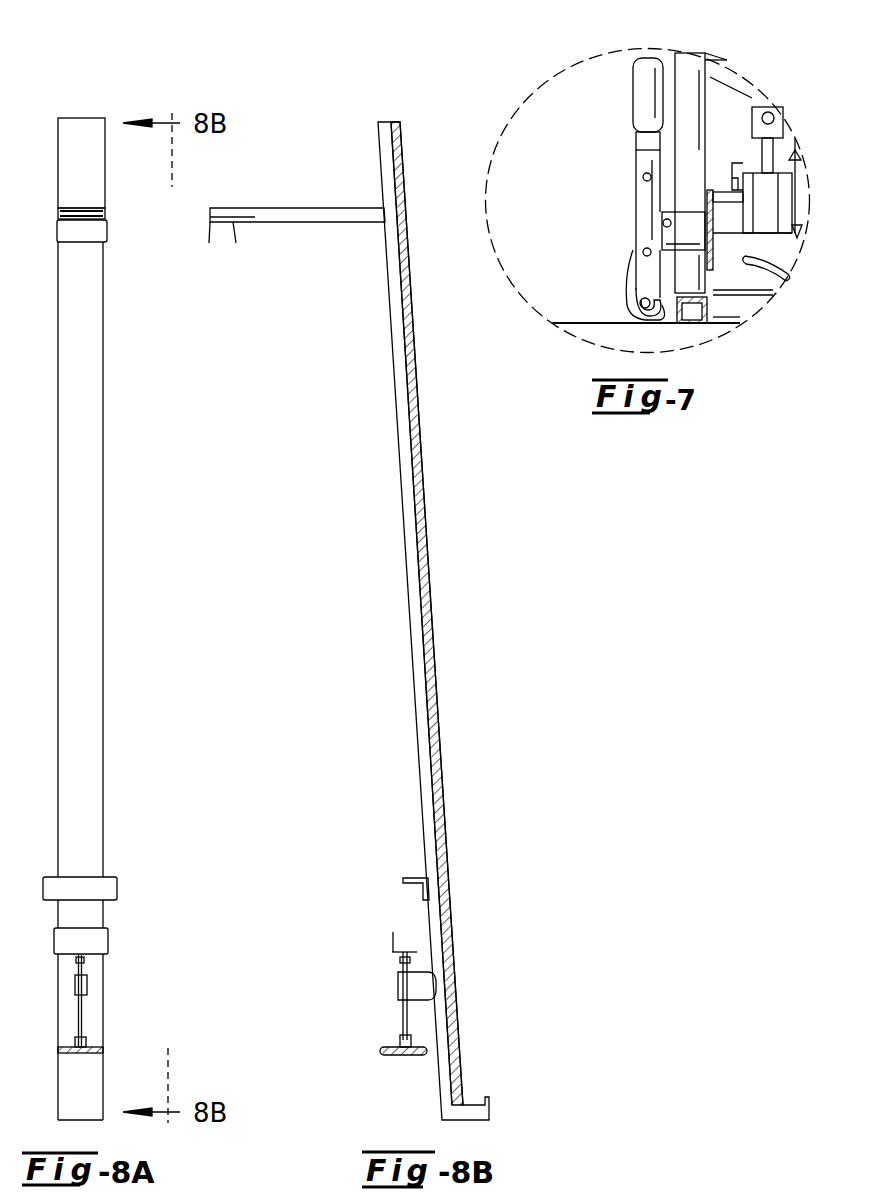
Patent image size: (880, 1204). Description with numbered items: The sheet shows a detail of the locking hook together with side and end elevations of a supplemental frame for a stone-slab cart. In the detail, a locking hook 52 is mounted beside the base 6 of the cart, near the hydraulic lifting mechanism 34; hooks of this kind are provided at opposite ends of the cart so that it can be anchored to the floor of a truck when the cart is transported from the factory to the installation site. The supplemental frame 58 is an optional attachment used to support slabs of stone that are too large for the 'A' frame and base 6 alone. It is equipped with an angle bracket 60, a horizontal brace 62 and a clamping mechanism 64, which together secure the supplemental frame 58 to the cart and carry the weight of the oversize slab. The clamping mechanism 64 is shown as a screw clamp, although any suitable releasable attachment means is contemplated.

In FIG. 7, the base 6 is at (688, 173).
In FIG. 7, the hydraulic lifting mechanism 34 is at (767, 213).
In FIG. 7, the locking hook 52 is at (633, 190).
In FIG. 8A, the supplemental frame 58 is at (103, 571).
In FIG. 8B, the supplemental frame 58 is at (405, 569).
In FIG. 8A, the angle bracket 60 is at (117, 877).
In FIG. 8B, the angle bracket 60 is at (407, 879).
In FIG. 8A, the horizontal brace 62 is at (105, 222).
In FIG. 8B, the horizontal brace 62 is at (282, 222).
In FIG. 8A, the clamping mechanism 64 is at (108, 950).
In FIG. 8B, the clamping mechanism 64 is at (395, 983).